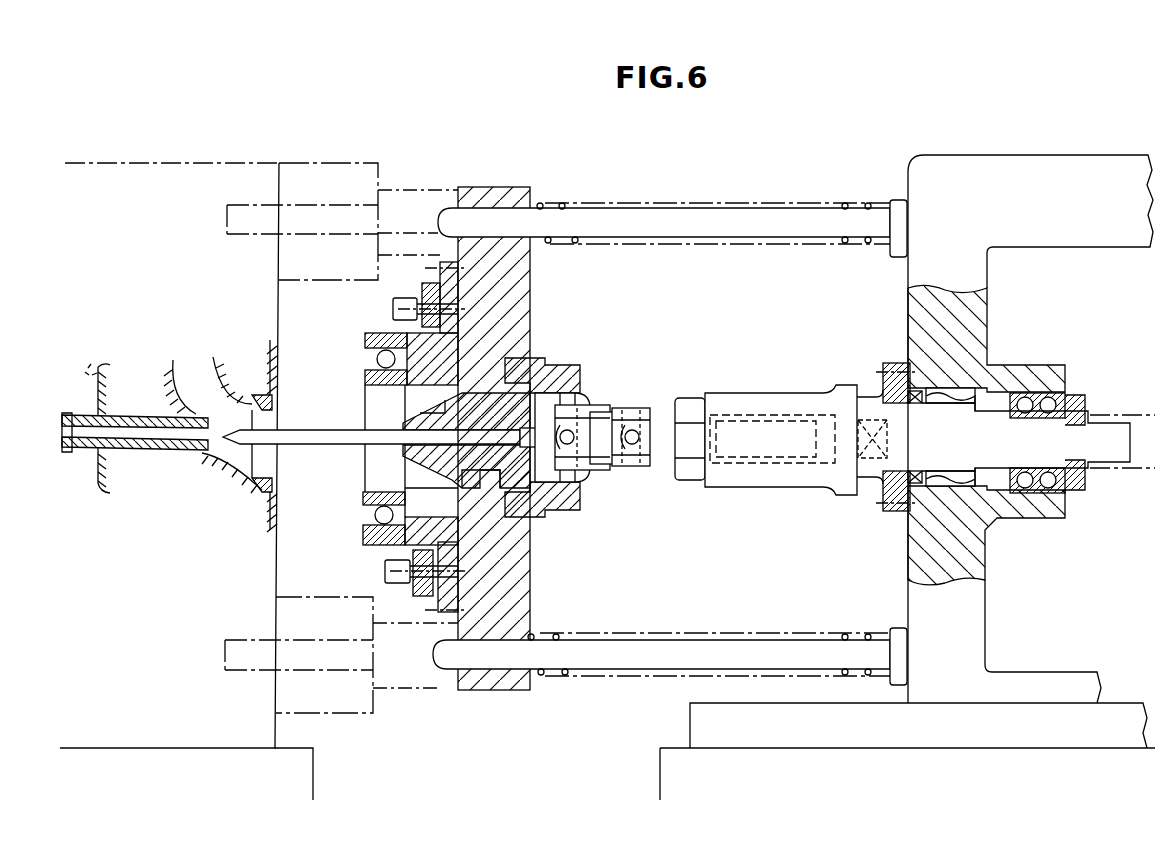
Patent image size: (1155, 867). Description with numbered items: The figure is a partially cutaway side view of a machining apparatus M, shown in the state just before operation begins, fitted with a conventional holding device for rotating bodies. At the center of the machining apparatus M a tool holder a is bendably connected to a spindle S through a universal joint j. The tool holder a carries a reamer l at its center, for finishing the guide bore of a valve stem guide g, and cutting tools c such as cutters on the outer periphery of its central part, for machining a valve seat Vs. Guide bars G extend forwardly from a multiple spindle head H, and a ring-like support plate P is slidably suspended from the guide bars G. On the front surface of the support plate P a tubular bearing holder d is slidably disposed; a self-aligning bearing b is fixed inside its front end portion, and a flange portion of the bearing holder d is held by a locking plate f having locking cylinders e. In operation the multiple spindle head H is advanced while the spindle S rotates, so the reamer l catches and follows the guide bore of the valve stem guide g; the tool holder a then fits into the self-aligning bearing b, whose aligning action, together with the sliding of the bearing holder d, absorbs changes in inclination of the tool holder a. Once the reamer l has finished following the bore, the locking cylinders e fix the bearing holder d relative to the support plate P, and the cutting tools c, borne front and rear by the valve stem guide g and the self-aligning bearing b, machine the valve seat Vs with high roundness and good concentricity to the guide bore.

The support plate P is at (512, 190).
The guide bars G is at (784, 216).
The multiple spindle head H is at (965, 313).
The machining apparatus M is at (474, 722).
The spindle S is at (772, 470).
The universal joint j is at (612, 468).
The tool holder a is at (522, 402).
The self-aligning bearing b is at (368, 362).
The cutting tools c is at (467, 478).
The bearing holder d is at (400, 322).
The locking cylinder e is at (406, 302).
The locking plate f is at (460, 268).
The valve stem guide g is at (149, 452).
The reamer l is at (325, 445).
The valve seat Vs is at (256, 492).